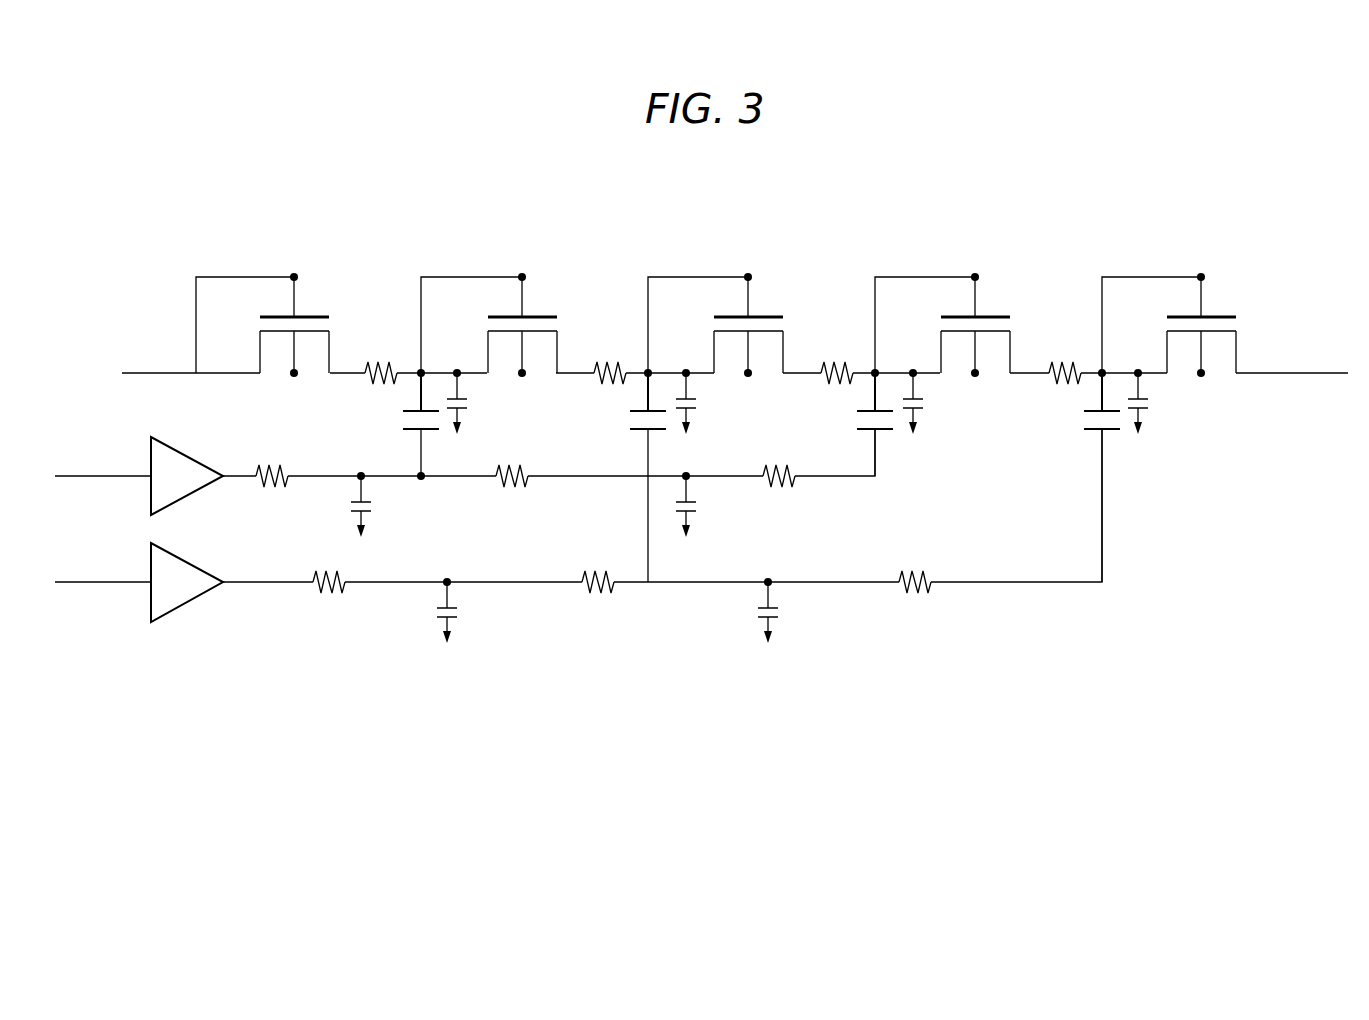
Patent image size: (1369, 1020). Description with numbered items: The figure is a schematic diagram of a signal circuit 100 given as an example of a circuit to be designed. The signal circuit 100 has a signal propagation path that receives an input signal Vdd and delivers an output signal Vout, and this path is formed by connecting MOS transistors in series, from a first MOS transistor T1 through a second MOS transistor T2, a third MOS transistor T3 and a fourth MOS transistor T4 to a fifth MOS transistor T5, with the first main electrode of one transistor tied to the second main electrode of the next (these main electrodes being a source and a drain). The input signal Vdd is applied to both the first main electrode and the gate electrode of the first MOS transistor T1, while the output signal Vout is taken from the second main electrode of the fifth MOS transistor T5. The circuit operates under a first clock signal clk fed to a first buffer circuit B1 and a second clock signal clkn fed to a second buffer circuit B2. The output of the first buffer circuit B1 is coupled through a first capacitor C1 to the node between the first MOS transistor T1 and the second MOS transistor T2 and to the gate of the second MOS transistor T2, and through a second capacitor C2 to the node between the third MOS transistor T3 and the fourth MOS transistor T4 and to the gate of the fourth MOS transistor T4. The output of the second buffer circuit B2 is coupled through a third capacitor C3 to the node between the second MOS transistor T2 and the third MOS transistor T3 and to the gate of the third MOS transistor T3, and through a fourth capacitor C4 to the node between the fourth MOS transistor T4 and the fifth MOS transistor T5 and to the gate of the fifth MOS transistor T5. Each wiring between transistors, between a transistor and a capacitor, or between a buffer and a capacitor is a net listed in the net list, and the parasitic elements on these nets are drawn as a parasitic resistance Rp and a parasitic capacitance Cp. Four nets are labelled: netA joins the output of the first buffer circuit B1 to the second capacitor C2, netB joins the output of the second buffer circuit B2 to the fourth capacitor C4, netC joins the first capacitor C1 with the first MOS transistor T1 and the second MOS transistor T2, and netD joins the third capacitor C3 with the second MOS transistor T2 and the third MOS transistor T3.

The signal circuit 100 is at (1167, 205).
The first MOS transistor T1 is at (320, 312).
The second MOS transistor T2 is at (546, 312).
The third MOS transistor T3 is at (772, 312).
The fourth MOS transistor T4 is at (999, 312).
The fifth MOS transistor T5 is at (1225, 312).
The first buffer circuit B1 is at (198, 461).
The second buffer circuit B2 is at (198, 568).
The first capacitor C1 is at (405, 424).
The second capacitor C2 is at (859, 422).
The third capacitor C3 is at (632, 475).
The fourth capacitor C4 is at (1086, 475).
The parasitic resistance Rp is at (668, 463).
The parasitic capacitance Cp is at (768, 506).
The element netA is at (458, 478).
The element netB is at (1017, 585).
The element netC is at (470, 277).
The element netD is at (700, 277).
The input signal Vdd is at (191, 358).
The output signal Vout is at (1292, 358).
The first clock signal clk is at (465, 452).
The second clock signal clkn is at (477, 569).